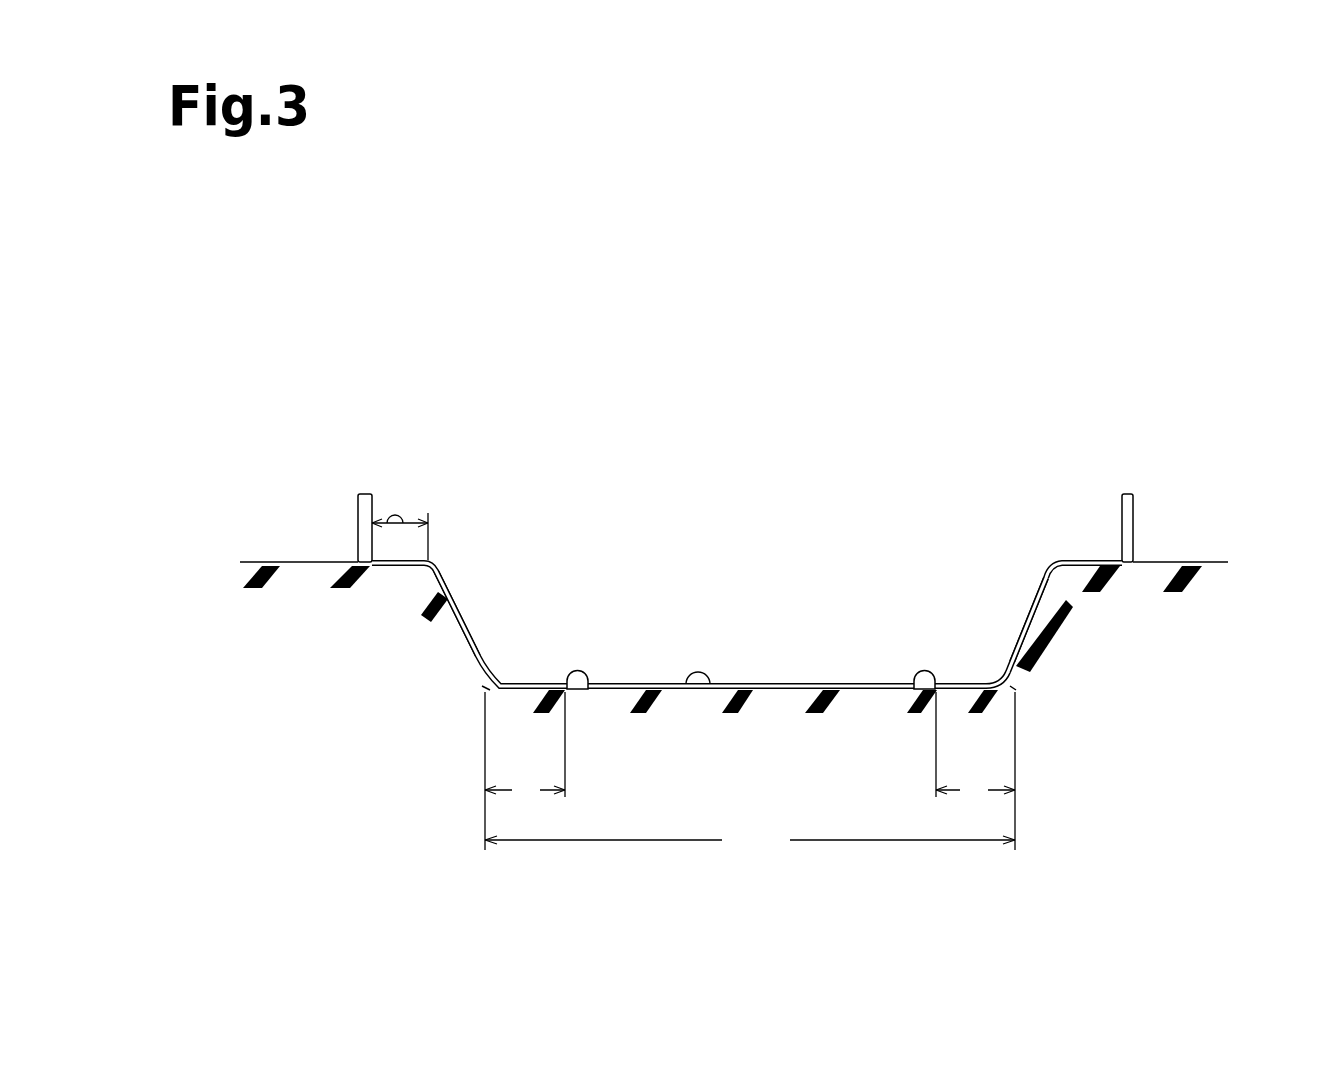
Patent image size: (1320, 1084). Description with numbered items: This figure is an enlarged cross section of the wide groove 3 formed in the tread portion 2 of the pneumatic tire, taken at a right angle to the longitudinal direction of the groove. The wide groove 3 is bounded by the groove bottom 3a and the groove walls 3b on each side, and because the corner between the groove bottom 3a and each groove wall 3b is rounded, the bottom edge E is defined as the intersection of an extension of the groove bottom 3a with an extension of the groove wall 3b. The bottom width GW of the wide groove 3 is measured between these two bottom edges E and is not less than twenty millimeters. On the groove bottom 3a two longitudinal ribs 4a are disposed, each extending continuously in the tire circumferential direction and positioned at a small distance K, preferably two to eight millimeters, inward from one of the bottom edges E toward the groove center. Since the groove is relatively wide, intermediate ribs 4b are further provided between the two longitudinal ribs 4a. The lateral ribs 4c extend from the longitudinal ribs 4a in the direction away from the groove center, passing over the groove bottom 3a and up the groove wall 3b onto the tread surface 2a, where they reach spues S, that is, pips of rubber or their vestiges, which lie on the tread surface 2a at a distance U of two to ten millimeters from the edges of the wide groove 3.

The tread portion 2 is at (732, 500).
The tread surface 2a is at (290, 560).
The wide groove 3 is at (747, 539).
The groove bottom 3a is at (709, 684).
The groove wall 3b is at (465, 618).
The longitudinal rib 4a is at (578, 677).
The intermediate rib 4b is at (765, 684).
The lateral rib 4c is at (468, 620).
The spue S is at (408, 492).
The distance U is at (393, 516).
The bottom edge E is at (485, 690).
The distance K is at (750, 771).
The bottom width GW is at (750, 841).